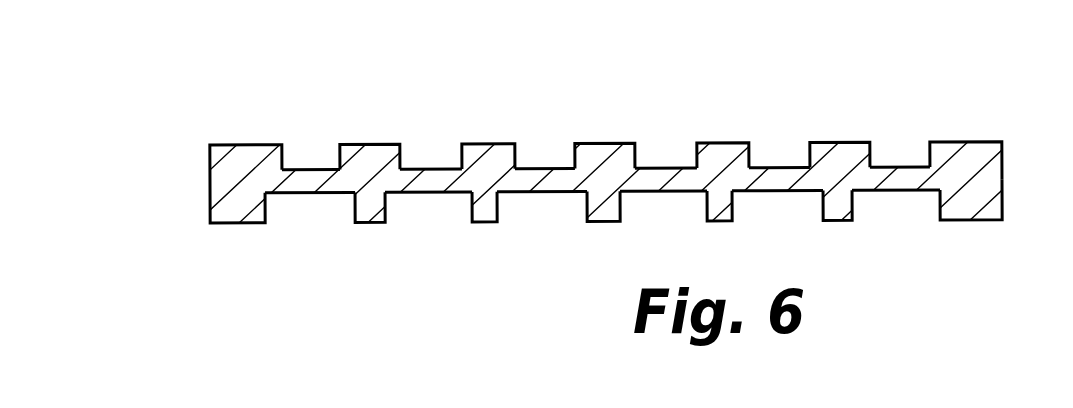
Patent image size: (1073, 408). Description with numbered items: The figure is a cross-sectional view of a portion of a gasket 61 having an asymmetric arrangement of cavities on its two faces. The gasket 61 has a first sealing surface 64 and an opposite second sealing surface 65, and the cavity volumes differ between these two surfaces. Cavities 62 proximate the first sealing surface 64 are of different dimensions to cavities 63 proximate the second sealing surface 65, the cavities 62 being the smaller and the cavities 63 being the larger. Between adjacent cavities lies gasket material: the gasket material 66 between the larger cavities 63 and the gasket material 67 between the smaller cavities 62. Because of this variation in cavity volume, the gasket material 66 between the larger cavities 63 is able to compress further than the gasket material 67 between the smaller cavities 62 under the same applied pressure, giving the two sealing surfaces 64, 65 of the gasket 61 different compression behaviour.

The gasket 61 is at (605, 204).
The cavities 62 is at (606, 168).
The cavities 63 is at (602, 191).
The first sealing surface 64 is at (966, 161).
The second sealing surface 65 is at (971, 200).
The gasket material 66 is at (603, 206).
The gasket material 67 is at (605, 155).